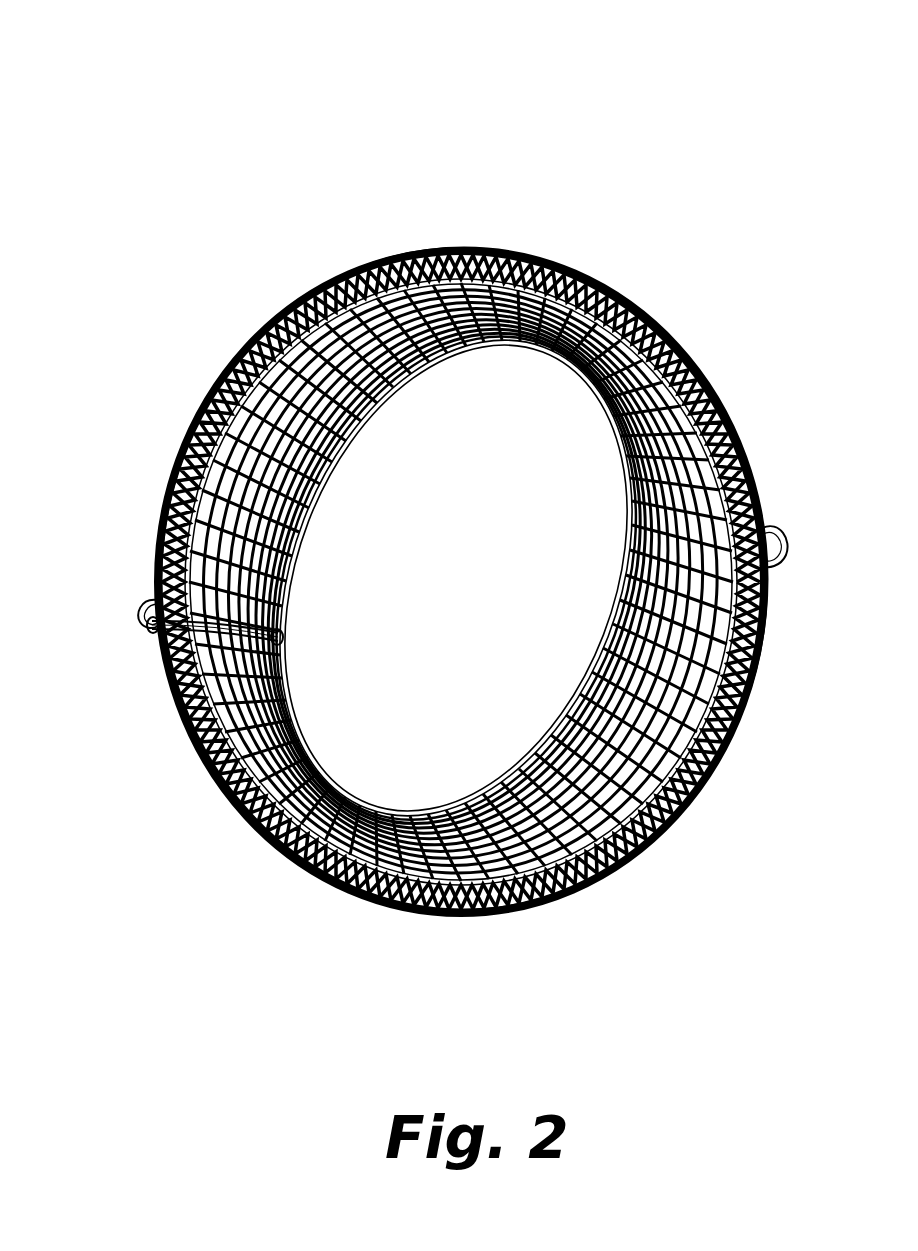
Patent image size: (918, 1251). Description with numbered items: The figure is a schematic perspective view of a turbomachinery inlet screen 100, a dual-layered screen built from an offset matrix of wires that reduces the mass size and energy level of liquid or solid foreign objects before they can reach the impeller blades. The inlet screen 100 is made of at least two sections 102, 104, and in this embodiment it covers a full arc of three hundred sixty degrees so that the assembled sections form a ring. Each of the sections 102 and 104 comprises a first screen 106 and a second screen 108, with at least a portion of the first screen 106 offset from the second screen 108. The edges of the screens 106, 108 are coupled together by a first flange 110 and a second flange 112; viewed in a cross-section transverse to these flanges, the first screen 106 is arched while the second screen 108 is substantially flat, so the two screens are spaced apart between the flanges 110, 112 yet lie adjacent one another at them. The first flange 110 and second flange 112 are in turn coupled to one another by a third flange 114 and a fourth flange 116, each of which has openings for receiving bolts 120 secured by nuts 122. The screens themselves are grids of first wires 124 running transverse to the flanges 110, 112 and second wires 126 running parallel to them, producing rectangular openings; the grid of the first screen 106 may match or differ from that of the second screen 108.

The inlet screen 100 is at (668, 106).
The section 102 is at (352, 495).
The section 104 is at (487, 714).
The first screen 106 is at (432, 252).
The second screen 108 is at (640, 478).
The first flange 110 is at (585, 370).
The second flange 112 is at (412, 388).
The third flange 114 is at (150, 604).
The fourth flange 116 is at (772, 535).
The bolt 120 is at (150, 626).
The nut 122 is at (162, 640).
The first wires 124 is at (603, 300).
The second wires 126 is at (461, 262).